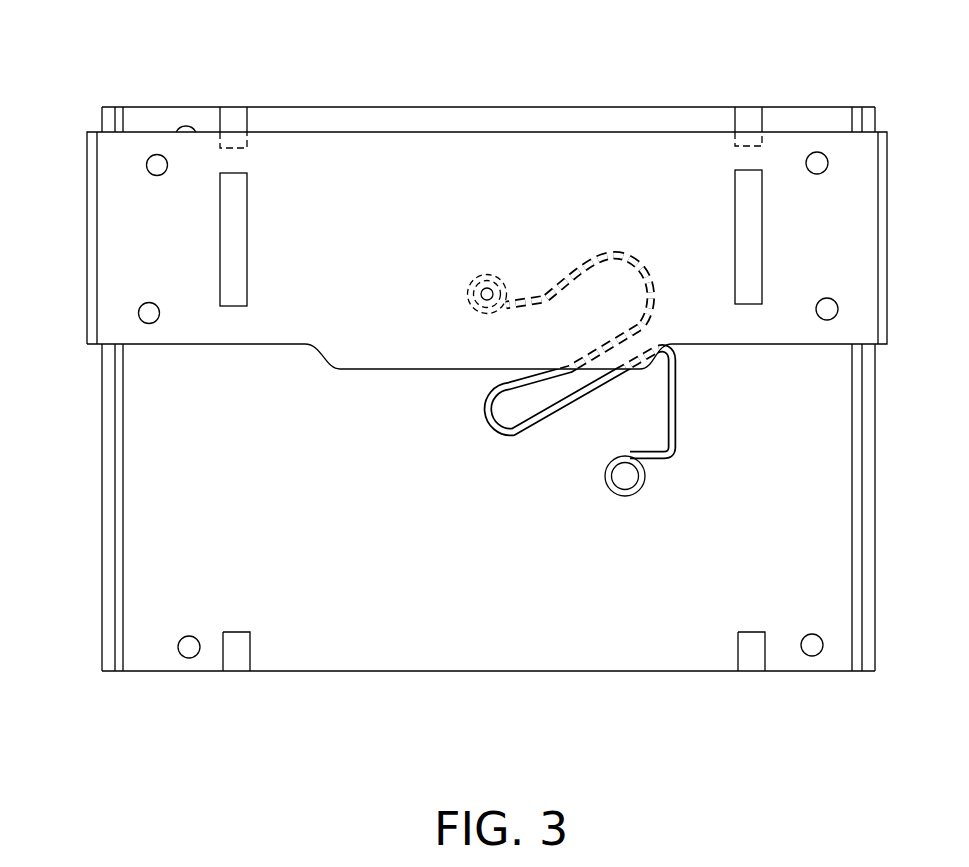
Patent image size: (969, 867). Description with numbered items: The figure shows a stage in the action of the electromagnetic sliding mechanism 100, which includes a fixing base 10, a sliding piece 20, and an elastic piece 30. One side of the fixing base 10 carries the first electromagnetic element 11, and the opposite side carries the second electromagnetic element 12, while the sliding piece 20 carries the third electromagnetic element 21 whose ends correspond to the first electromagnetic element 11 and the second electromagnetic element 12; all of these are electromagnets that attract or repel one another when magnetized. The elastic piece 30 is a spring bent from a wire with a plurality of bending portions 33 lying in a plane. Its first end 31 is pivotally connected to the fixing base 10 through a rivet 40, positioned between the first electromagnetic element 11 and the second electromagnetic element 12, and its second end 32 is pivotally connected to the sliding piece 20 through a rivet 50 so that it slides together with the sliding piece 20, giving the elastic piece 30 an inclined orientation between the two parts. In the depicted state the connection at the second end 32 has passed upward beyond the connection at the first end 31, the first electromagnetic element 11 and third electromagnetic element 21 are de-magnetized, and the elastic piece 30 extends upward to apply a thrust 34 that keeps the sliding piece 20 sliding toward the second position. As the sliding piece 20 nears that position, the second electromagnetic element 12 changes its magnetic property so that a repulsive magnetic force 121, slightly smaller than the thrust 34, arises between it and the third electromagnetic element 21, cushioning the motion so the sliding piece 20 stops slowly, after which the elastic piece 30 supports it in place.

The electromagnetic sliding mechanism 100 is at (812, 31).
The fixing base 10 is at (488, 394).
The first electromagnetic element 11 is at (237, 668).
The second electromagnetic element 12 is at (238, 110).
The repulsive magnetic force 121 is at (264, 145).
The sliding piece 20 is at (459, 274).
The third electromagnetic element 21 is at (235, 307).
The elastic piece 30 is at (571, 355).
The first end 31 is at (647, 478).
The second end 32 is at (497, 266).
The bending portions 33 is at (652, 311).
The thrust 34 is at (454, 332).
The rivet 40 is at (624, 452).
The rivet 50 is at (472, 287).